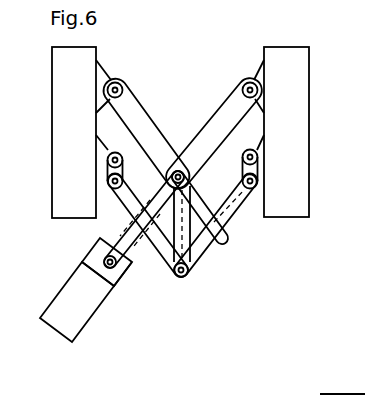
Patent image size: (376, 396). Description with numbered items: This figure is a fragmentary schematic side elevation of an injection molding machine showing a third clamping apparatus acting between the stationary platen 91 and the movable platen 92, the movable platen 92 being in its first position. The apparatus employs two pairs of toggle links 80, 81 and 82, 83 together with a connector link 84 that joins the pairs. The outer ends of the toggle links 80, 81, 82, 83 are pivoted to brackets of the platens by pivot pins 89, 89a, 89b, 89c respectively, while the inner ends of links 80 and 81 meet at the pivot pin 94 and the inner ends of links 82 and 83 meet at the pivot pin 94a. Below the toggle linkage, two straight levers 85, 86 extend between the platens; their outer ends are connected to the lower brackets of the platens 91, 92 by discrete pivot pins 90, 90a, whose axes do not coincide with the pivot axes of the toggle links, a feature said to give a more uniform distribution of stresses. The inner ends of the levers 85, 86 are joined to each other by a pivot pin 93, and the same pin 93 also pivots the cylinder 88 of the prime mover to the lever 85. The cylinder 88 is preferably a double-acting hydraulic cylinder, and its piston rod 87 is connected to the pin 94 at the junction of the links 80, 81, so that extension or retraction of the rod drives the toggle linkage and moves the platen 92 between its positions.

The toggle link 80 is at (135, 122).
The toggle link 81 is at (218, 128).
The toggle link 82 is at (165, 250).
The toggle link 83 is at (208, 243).
The connector link 84 is at (206, 238).
The straight lever 85 is at (110, 225).
The straight lever 86 is at (212, 180).
The piston rod 87 is at (133, 265).
The cylinder 88 is at (73, 325).
The pivot pin 89 is at (119, 82).
The pivot pin 89a is at (248, 78).
The pivot pin 89b is at (107, 187).
The pivot pin 89c is at (258, 188).
The pivot pin 90 is at (108, 160).
The pivot pin 90a is at (258, 157).
The stationary platen 91 is at (66, 95).
The movable platen 92 is at (290, 104).
The pivot pin 93 is at (80, 268).
The pivot pin 94 is at (178, 170).
The pivot pin 94a is at (185, 278).